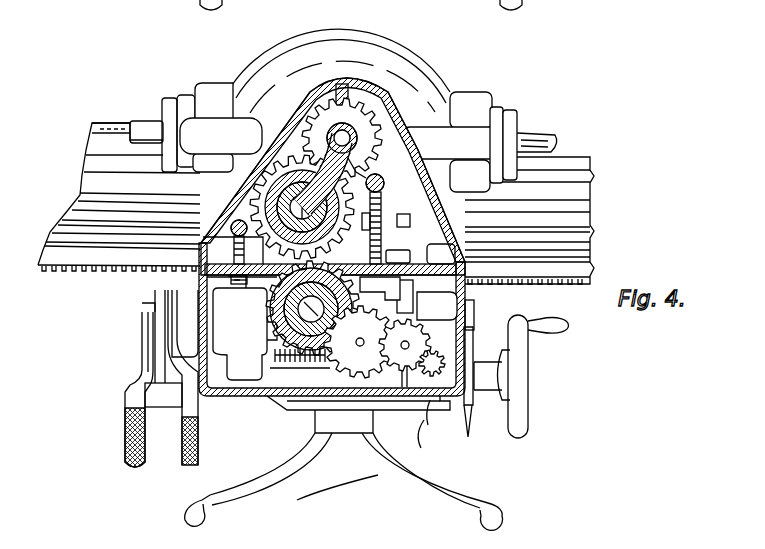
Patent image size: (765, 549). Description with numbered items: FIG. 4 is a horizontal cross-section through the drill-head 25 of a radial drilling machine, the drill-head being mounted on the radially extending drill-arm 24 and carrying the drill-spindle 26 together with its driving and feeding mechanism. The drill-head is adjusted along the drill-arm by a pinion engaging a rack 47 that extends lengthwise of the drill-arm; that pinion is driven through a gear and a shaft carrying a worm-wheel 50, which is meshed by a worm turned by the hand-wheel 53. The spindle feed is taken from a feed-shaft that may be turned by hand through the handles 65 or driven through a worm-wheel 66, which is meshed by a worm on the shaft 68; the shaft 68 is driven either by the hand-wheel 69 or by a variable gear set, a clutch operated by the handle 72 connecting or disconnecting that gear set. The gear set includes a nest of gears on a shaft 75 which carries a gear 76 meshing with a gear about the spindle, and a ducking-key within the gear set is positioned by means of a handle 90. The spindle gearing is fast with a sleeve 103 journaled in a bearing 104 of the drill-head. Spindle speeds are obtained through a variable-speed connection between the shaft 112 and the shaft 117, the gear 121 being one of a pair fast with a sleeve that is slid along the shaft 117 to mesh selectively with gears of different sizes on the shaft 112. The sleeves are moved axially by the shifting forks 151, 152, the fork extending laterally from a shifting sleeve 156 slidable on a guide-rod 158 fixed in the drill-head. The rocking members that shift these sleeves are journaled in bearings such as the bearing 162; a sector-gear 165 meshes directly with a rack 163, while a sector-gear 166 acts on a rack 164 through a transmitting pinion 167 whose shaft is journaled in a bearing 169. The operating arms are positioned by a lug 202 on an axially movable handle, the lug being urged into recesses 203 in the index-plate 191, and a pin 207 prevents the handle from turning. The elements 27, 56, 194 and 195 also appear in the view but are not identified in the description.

The drill-arm 24 is at (580, 163).
The drill-head 25 is at (473, 312).
The drill-spindle 26 is at (258, 325).
The stop 27 is at (551, 133).
The rack 47 is at (562, 285).
The worm-wheel 50 is at (428, 316).
The hand-wheel 53 is at (522, 368).
The pinion 56 is at (412, 347).
The handles 65 is at (256, 478).
The worm-wheel 66 is at (316, 364).
The shaft 68 is at (445, 364).
The hand-wheel 69 is at (430, 434).
The handle 72 is at (469, 440).
The shaft 75 is at (355, 352).
The gear 76 is at (360, 350).
The handle 90 is at (432, 430).
The sleeve 103 is at (268, 302).
The bearing 104 is at (270, 335).
The shaft 112 is at (290, 183).
The shaft 117 is at (346, 133).
The gear 121 is at (322, 108).
The shifting fork 151 is at (243, 192).
The shifting fork 152 is at (378, 150).
The shifting sleeve 156 is at (382, 178).
The guide-rod 158 is at (430, 158).
The bearing 162 is at (420, 239).
The rack 163 is at (197, 238).
The rack 164 is at (385, 186).
The sector-gear 165 is at (199, 257).
The sector-gear 166 is at (380, 265).
The transmitting pinion 167 is at (383, 237).
The bearing 169 is at (382, 224).
The index-plate 191 is at (162, 400).
The knurled knob 194 is at (127, 455).
The knurled knob 195 is at (182, 462).
The positioning lug 202 is at (142, 395).
The recesses 203 is at (216, 408).
The pin 207 is at (287, 180).